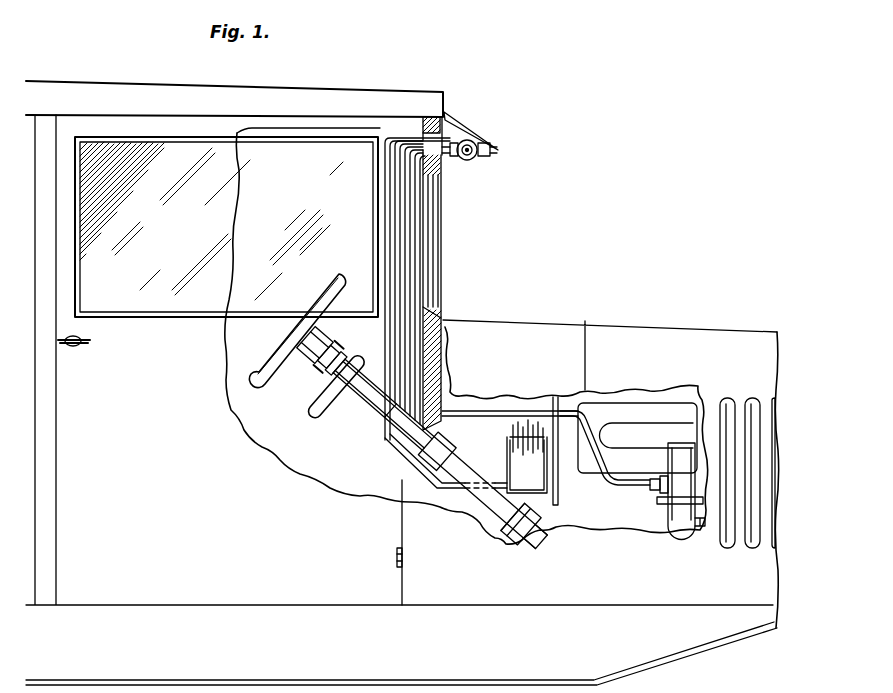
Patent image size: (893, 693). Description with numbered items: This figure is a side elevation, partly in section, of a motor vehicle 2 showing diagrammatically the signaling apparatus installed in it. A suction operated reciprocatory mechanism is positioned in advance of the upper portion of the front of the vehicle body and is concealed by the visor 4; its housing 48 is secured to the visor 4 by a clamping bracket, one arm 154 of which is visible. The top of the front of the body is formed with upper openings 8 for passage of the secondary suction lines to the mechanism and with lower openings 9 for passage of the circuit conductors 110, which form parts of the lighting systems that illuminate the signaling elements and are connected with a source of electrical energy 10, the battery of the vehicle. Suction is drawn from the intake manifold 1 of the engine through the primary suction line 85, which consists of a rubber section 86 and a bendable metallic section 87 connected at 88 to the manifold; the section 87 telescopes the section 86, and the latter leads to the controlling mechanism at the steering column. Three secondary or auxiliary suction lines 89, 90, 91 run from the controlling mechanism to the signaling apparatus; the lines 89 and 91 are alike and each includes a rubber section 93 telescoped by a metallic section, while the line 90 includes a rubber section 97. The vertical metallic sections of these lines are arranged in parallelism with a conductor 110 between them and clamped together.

The intake manifold 1 is at (677, 483).
The vehicle 2 is at (311, 586).
The visor 4 is at (452, 115).
The upper openings 8 is at (428, 125).
The lower openings 9 is at (442, 158).
The source of electrical energy 10 is at (520, 427).
The housing 48 is at (477, 161).
The primary suction line 85 is at (495, 417).
The section of primary suction line 86 is at (463, 413).
The section of primary suction line 87 is at (600, 463).
The connection 88 is at (653, 488).
The secondary suction line 89 is at (400, 268).
The secondary suction line 90 is at (407, 278).
The secondary suction line 91 is at (417, 282).
The rubber tubing section 93 is at (398, 360).
The rubber tubing section 97 is at (407, 373).
The circuit conductor 110 is at (392, 176).
The bracket arm 154 is at (482, 139).